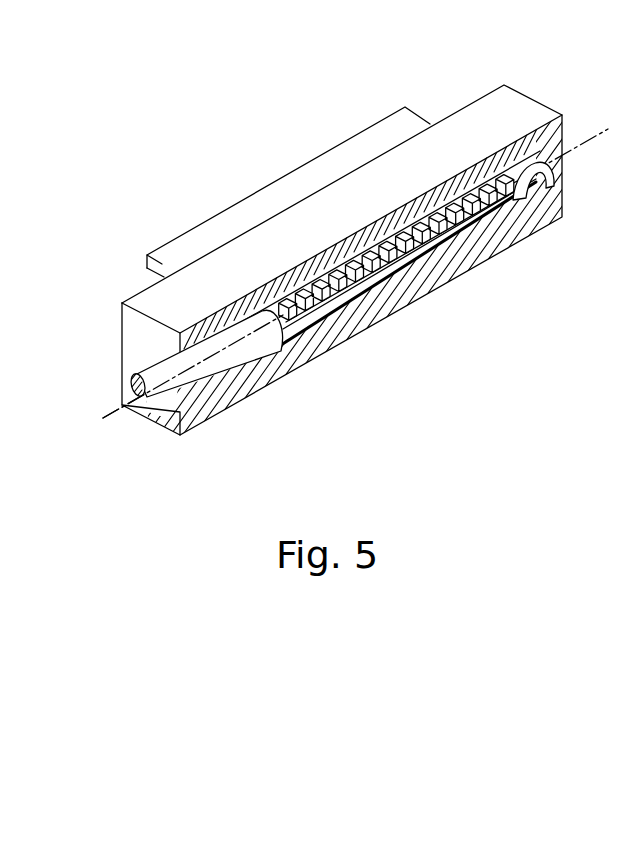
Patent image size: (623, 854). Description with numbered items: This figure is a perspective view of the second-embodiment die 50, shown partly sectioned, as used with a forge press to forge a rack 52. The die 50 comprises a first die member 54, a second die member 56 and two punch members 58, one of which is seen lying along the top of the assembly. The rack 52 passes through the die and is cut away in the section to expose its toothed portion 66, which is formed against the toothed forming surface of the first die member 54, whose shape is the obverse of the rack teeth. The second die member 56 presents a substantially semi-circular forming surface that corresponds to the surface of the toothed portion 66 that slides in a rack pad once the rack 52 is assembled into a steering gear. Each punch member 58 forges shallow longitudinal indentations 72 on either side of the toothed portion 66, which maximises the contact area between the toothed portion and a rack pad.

The die 50 is at (227, 157).
The rack 52 is at (251, 365).
The first die member 54 is at (136, 330).
The second die member 56 is at (333, 342).
The punch member 58 is at (192, 243).
The toothed portion 66 is at (450, 210).
The longitudinal indentation 72 is at (518, 196).